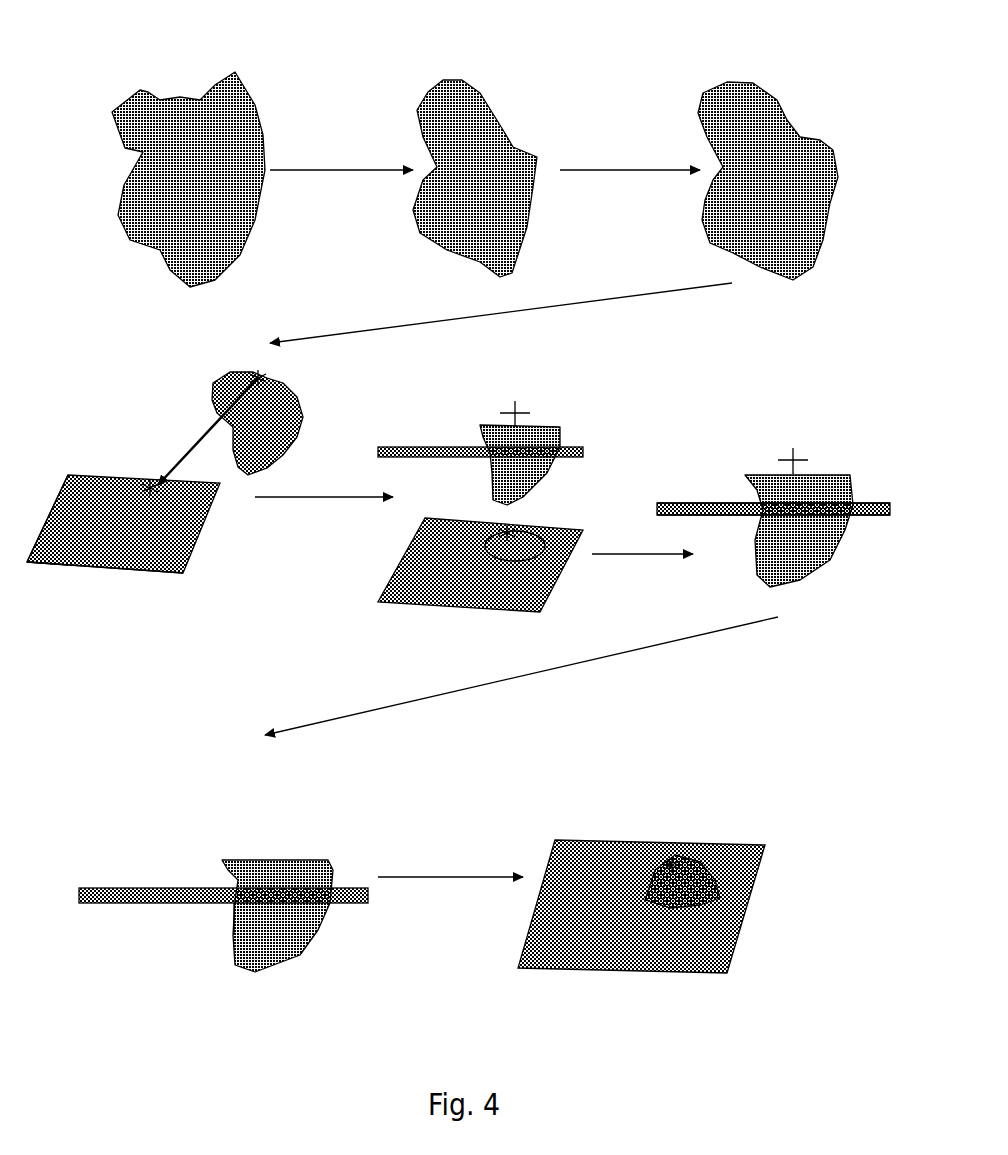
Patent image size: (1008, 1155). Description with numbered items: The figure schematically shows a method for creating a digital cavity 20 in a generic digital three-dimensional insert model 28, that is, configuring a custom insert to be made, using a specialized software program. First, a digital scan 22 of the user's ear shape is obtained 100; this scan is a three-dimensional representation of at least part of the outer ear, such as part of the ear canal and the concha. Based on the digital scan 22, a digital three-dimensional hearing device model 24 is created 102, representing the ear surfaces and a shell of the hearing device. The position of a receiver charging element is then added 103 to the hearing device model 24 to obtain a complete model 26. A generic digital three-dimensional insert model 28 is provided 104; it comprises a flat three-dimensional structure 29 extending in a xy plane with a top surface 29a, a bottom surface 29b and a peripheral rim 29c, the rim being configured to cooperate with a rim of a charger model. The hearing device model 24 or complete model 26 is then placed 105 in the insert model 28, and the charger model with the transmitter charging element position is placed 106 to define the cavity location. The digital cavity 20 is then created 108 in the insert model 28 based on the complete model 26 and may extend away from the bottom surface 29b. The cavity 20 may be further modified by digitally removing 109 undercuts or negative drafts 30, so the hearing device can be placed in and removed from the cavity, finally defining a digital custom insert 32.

The obtaining a digital scan 100 is at (198, 151).
The digital scan 22 is at (233, 192).
The creating a digital 3D hearing device model 102 is at (378, 250).
The digital 3D hearing device model 24 is at (513, 225).
The adding the position of a receiver charging element 103 is at (534, 497).
The complete model 26 is at (818, 255).
The providing a generic digital 3D insert model 104 is at (462, 667).
The generic digital 3D insert model 28 is at (462, 667).
The flat 3D structure 29 is at (149, 563).
The top surface 29a is at (55, 545).
The bottom surface 29b is at (98, 572).
The peripheral rim 29c is at (72, 568).
The placing the digital 3D hearing device model 105 is at (180, 445).
The placing the digital 3D charger model 106 is at (498, 528).
The creating the digital cavity 108 is at (566, 712).
The digital cavity 20 is at (795, 587).
The digitally removing undercuts 109 is at (172, 864).
The undercut / negative draft 30 is at (232, 912).
The digital custom insert 32 is at (610, 862).